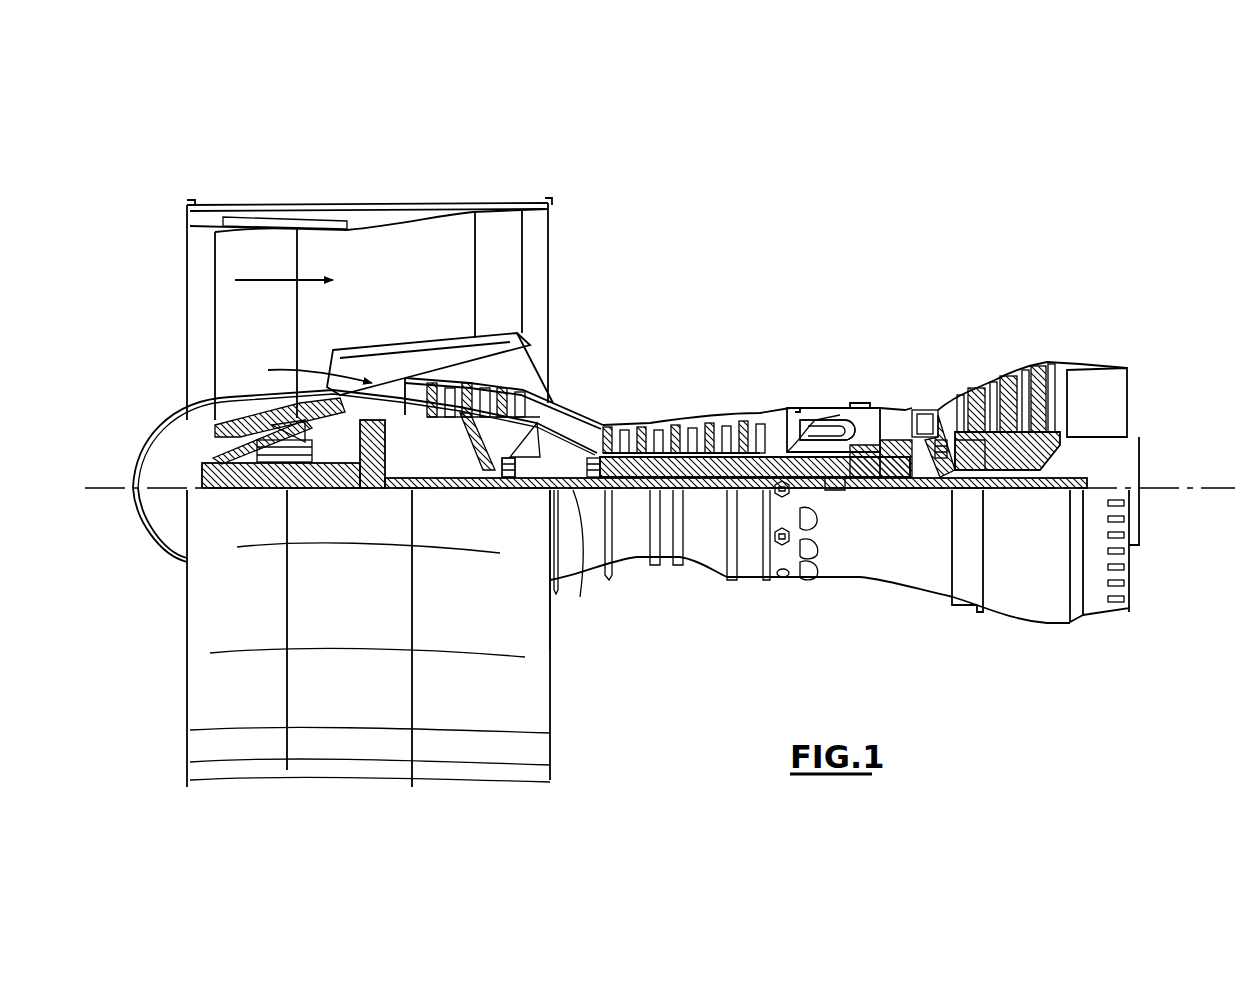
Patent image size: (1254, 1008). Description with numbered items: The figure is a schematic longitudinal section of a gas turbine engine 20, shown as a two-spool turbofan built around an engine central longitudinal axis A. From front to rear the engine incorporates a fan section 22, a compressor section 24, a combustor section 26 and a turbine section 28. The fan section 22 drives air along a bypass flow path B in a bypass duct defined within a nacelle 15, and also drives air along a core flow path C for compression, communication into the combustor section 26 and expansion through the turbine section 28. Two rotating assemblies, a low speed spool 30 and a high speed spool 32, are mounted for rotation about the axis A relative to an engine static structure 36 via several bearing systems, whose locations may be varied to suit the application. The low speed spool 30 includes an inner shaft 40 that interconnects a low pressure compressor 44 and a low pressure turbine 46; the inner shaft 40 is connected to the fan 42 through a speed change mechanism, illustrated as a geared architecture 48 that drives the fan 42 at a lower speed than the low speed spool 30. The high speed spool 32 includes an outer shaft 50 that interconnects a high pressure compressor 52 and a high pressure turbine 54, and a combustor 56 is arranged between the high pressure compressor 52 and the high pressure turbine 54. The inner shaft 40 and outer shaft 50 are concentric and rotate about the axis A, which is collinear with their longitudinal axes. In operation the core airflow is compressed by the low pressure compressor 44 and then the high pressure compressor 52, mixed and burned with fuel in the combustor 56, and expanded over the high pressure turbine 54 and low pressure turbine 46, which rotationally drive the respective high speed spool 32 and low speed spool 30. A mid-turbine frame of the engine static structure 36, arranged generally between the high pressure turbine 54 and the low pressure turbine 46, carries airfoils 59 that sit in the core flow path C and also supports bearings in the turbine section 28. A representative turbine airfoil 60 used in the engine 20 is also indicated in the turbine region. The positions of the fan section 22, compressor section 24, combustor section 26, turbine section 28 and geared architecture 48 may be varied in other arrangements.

The nacelle 15 is at (368, 208).
The gas turbine engine 20 is at (830, 258).
The fan section 22 is at (298, 198).
The compressor section 24 is at (603, 394).
The combustor section 26 is at (822, 386).
The turbine section 28 is at (970, 350).
The low speed spool 30 is at (707, 492).
The high speed spool 32 is at (752, 445).
The engine static structure 36 is at (748, 582).
The inner shaft 40 is at (573, 490).
The fan 42 is at (272, 334).
The low pressure compressor 44 is at (468, 398).
The low pressure turbine 46 is at (1013, 382).
The geared architecture 48 is at (376, 468).
The outer shaft 50 is at (836, 487).
The high pressure compressor 52 is at (680, 468).
The high pressure turbine 54 is at (886, 416).
The combustor 56 is at (824, 432).
The airfoils 59 is at (960, 432).
The turbine airfoil 60 is at (920, 398).
The engine central longitudinal axis A is at (1218, 488).
The bypass flow path B is at (270, 276).
The core flow path C is at (310, 369).